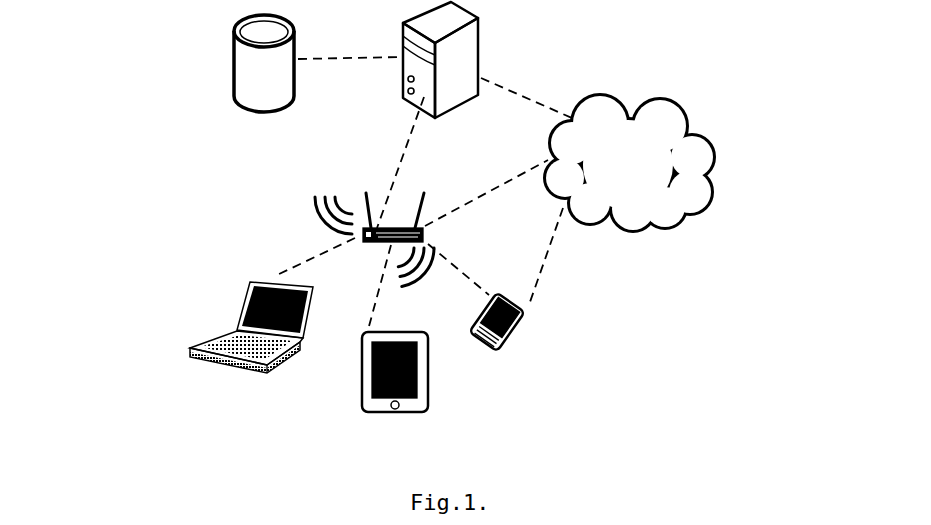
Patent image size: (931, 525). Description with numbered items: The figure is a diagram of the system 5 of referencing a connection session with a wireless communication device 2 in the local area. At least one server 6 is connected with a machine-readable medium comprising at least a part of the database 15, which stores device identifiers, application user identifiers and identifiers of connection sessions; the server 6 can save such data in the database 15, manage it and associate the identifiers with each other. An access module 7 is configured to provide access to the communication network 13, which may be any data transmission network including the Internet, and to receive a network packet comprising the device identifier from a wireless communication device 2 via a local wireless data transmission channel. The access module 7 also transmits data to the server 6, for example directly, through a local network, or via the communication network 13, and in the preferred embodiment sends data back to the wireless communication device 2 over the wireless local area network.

The wireless communication device 2 is at (237, 324).
The system of referencing the connection session 5 is at (223, 165).
The server 6 is at (447, 66).
The access module 7 is at (350, 232).
The communication network 13 is at (680, 163).
The database 15 is at (250, 58).